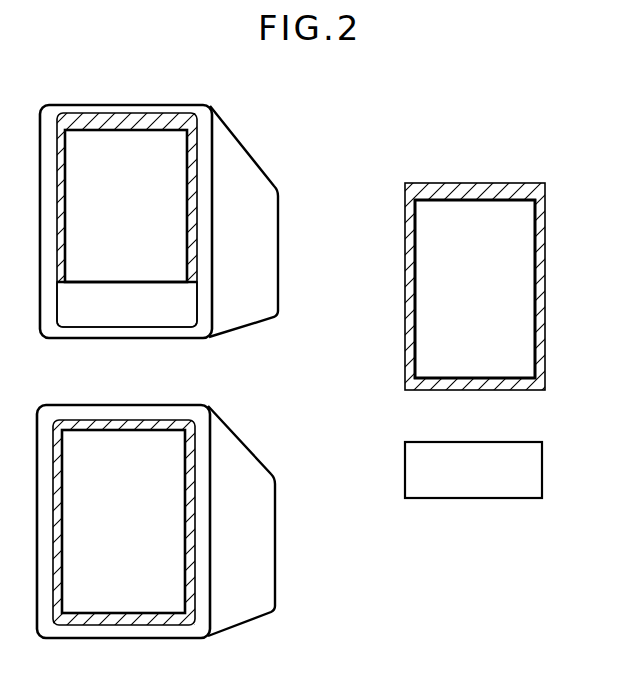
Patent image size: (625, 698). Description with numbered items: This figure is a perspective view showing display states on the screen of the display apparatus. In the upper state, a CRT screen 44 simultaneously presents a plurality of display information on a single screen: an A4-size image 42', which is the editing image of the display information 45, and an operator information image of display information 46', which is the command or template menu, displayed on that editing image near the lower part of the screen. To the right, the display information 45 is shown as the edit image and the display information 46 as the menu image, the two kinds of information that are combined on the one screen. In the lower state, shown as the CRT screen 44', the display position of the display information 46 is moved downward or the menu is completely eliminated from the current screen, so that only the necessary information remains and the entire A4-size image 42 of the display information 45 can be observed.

The CRT screen 44 is at (159, 198).
The A4-size image 42' is at (312, 349).
The display information 46' is at (159, 323).
The CRT screen 44' is at (156, 502).
The A4-size image 42 is at (312, 349).
The display information 45 is at (515, 183).
The display information 46 is at (480, 454).